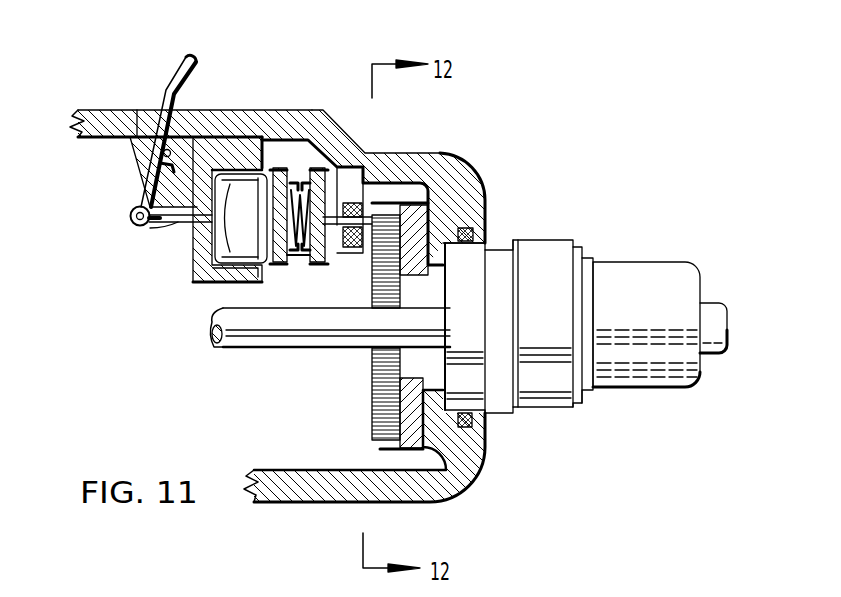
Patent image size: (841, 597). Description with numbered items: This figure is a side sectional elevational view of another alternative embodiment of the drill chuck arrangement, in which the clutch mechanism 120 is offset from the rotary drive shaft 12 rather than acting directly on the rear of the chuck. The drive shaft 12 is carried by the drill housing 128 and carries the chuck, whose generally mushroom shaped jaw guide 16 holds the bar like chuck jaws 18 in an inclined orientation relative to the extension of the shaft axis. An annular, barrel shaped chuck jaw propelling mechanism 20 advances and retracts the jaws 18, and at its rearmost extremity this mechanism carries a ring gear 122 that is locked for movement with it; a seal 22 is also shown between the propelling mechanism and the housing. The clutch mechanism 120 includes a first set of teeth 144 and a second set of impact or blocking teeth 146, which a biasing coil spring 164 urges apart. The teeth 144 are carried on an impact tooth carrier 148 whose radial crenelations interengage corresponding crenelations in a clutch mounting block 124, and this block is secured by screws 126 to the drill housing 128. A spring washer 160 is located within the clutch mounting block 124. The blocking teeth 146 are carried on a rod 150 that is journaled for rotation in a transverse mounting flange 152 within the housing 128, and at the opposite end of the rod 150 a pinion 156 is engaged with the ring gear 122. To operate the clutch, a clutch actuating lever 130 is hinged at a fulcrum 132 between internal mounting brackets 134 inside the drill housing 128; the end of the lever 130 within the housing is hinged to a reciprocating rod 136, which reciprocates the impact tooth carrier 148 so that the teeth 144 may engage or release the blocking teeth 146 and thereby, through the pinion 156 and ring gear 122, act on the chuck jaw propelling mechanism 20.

The rotary drive shaft 12 is at (288, 333).
The jaw guide 16 is at (620, 283).
The chuck jaws 18 is at (712, 308).
The chuck jaw propelling mechanism 20 is at (473, 377).
The seal 22 is at (470, 230).
The clutch mechanism 120 is at (165, 276).
The ring gear 122 is at (435, 447).
The clutch mounting block 124 is at (214, 287).
The screws 126 is at (223, 110).
The drill housing 128 is at (88, 110).
The clutch actuating lever 130 is at (185, 62).
The fulcrum 132 is at (132, 205).
The internal mounting brackets 134 is at (143, 147).
The reciprocating rod 136 is at (167, 233).
The first set of teeth 144 is at (293, 170).
The impact or blocking teeth 146 is at (318, 172).
The impact tooth carrier 148 is at (250, 168).
The rod 150 is at (338, 215).
The transverse mounting flange 152 is at (435, 195).
The pinion 156 is at (432, 212).
The spring washer 160 is at (195, 285).
The biasing coil spring 164 is at (310, 266).